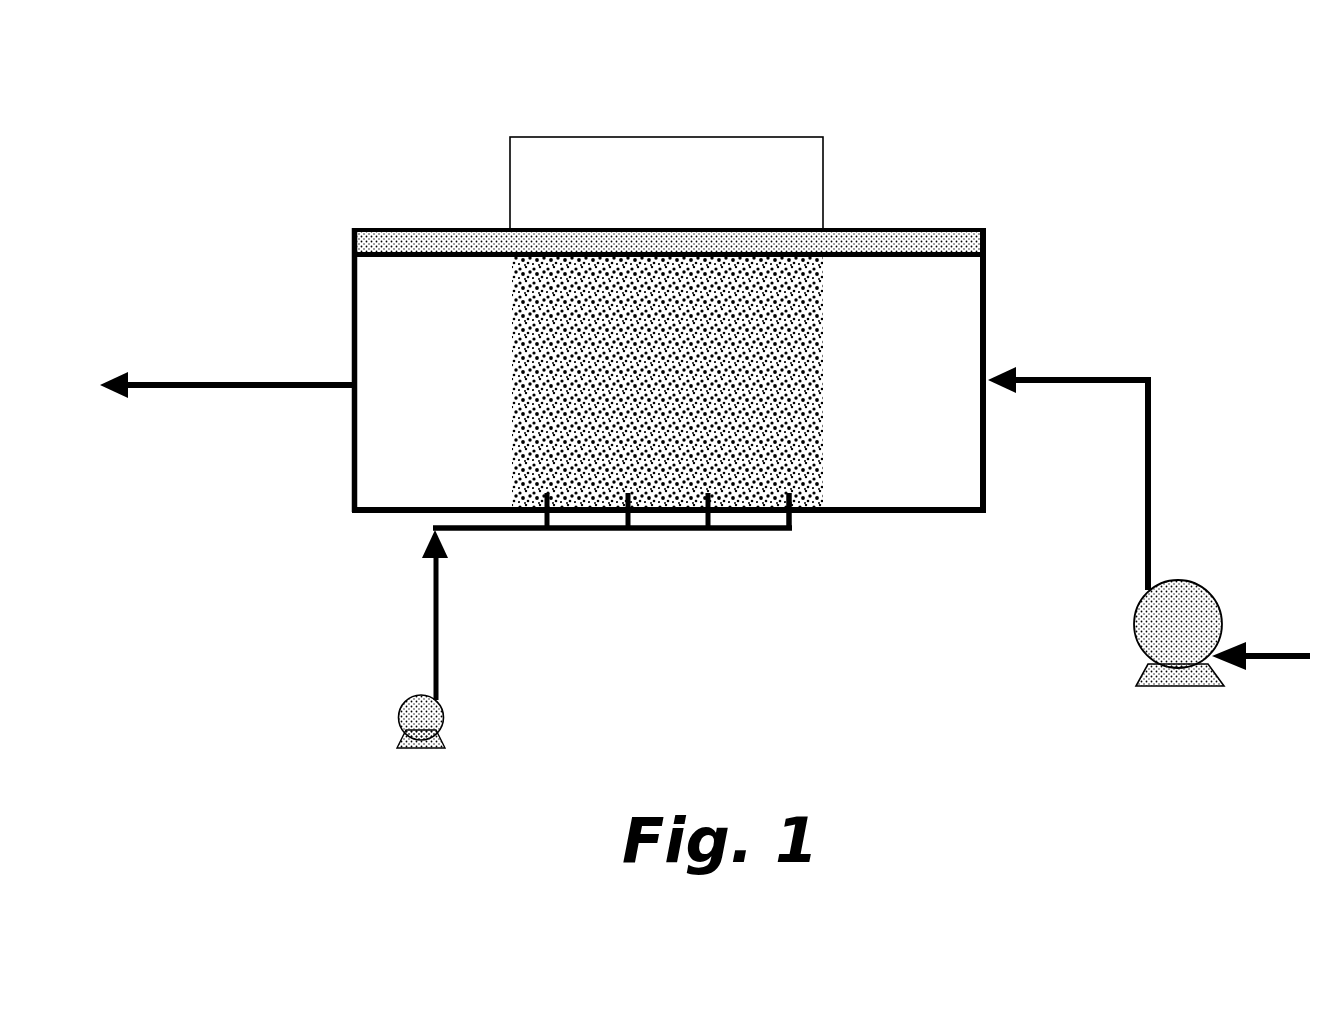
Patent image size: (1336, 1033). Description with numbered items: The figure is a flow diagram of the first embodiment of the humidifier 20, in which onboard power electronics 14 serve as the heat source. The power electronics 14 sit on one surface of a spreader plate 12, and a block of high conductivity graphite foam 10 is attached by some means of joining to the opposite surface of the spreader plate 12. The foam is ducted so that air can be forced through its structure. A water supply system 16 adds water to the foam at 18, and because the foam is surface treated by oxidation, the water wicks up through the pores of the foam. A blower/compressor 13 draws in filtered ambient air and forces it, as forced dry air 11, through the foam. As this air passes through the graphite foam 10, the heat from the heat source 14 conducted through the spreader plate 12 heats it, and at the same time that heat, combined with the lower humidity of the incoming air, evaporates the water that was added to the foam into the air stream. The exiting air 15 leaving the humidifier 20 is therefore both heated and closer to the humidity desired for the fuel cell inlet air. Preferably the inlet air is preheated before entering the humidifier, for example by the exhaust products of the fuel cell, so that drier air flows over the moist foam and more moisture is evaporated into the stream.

The high conductivity graphite foam 10 is at (751, 444).
The forced dry air 11 is at (1101, 412).
The spreader plate 12 is at (690, 182).
The blower/compressor 13 is at (1126, 664).
The power electronics 14 is at (707, 128).
The exiting air 15 is at (227, 303).
The water supply system 16 is at (359, 639).
The water addition point 18 is at (788, 493).
The humidifier 20 is at (604, 276).